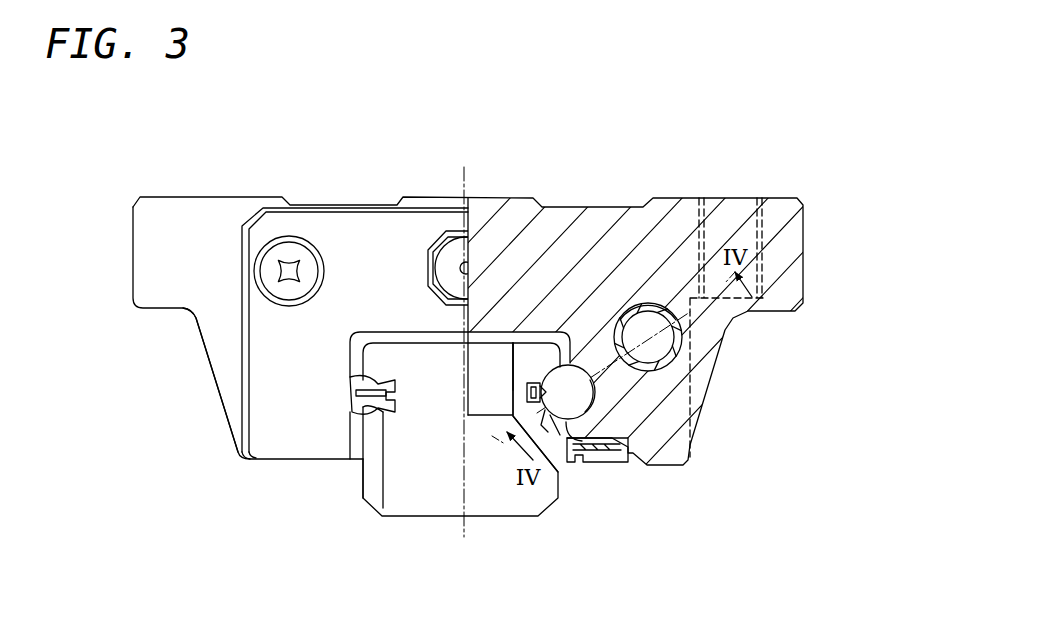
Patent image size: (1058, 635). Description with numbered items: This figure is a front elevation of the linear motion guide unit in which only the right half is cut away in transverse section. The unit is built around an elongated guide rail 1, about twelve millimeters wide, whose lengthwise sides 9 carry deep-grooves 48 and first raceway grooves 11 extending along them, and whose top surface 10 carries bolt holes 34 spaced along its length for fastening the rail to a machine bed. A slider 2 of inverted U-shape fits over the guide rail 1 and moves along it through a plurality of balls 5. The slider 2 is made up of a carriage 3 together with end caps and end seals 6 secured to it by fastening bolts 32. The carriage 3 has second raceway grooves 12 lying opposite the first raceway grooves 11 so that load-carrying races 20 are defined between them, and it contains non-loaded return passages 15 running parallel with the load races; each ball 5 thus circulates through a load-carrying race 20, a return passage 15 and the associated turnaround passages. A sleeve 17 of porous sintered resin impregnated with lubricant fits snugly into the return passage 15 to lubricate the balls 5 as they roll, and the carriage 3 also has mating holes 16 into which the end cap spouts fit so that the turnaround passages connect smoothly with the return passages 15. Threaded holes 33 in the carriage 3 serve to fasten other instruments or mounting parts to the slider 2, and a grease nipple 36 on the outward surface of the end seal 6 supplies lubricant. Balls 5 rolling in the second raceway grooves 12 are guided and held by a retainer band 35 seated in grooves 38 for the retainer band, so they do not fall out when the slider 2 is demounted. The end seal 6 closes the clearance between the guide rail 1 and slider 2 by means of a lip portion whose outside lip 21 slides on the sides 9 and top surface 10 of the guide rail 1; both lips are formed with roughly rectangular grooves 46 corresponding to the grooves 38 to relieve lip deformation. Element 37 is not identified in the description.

The guide rail 1 is at (424, 487).
The slider 2 is at (375, 190).
The carriage 3 is at (205, 218).
The ball 5 is at (588, 393).
The end seal 6 is at (267, 408).
The lengthwise sides 9 is at (362, 480).
The top surface 10 is at (410, 340).
The first raceway grooves 11 is at (540, 415).
The second raceway grooves 12 is at (577, 364).
The return passage 15 is at (658, 348).
The mating holes 16 is at (652, 305).
The sleeve 17 is at (678, 345).
The load-carrying race 20 is at (582, 410).
The outside lip 21 is at (353, 440).
The fastening bolts 32 is at (292, 250).
The threaded holes 33 is at (708, 226).
The bolt holes 34 is at (493, 467).
The retainer band 35 is at (539, 392).
The grease nipple 36 is at (455, 253).
The seal 37 is at (603, 463).
The grooves for the retainer band 38 is at (530, 381).
The grooves 46 is at (383, 490).
The deep-grooves 48 is at (557, 405).